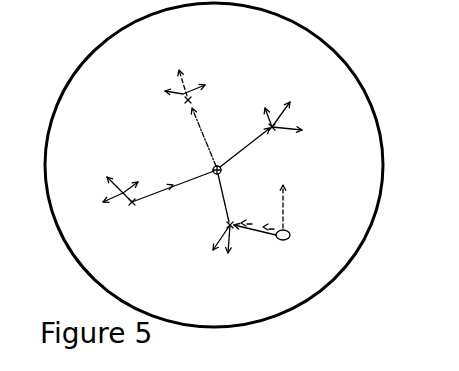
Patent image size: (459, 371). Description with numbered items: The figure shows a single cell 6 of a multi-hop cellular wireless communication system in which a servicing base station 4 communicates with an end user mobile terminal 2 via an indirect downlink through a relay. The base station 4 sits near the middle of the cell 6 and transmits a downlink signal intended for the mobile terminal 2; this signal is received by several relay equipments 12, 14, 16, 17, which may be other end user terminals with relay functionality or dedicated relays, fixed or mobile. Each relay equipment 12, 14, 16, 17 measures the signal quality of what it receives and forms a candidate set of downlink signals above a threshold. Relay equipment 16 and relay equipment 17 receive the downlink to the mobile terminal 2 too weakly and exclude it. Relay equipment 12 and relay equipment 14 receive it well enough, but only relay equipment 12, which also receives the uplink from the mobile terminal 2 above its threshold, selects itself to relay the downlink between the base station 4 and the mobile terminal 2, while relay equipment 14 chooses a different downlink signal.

The mobile end user terminal 2 is at (290, 237).
The base station 4 is at (213, 166).
The cell 6 is at (290, 311).
The relay equipment 12 is at (238, 232).
The relay equipment 14 is at (282, 132).
The relay equipment 16 is at (198, 98).
The relay equipment 17 is at (138, 203).